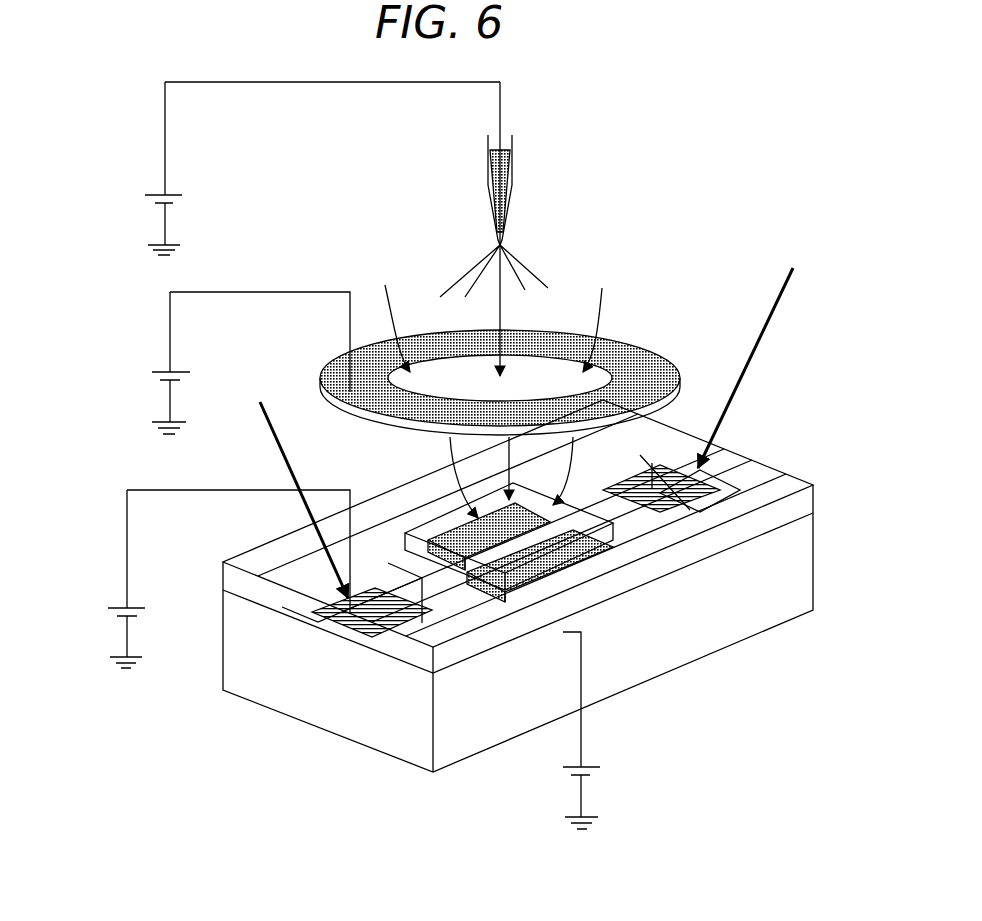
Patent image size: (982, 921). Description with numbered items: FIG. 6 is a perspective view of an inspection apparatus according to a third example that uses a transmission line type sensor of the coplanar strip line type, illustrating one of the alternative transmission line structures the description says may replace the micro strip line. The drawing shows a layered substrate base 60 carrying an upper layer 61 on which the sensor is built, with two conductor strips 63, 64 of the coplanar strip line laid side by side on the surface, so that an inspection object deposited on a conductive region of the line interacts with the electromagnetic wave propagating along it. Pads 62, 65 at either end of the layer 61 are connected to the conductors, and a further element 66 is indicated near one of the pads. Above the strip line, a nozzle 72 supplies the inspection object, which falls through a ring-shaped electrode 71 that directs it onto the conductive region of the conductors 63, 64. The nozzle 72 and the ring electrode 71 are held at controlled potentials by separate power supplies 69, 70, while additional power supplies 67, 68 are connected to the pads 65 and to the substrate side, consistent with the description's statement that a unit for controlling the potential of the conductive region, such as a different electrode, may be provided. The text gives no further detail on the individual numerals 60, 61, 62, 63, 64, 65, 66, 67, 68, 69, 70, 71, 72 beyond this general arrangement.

The substrate 60 is at (750, 627).
The insulating layer 61 is at (788, 478).
The electrode pad 62 is at (655, 445).
The first electrode 63 is at (445, 520).
The second electrode 64 is at (590, 572).
The electrode pad 65 is at (330, 628).
The wiring 66 is at (680, 503).
The power supply 67 is at (110, 618).
The power supply 68 is at (597, 778).
The power supply 69 is at (148, 207).
The power supply 70 is at (152, 382).
The ring electrode 71 is at (573, 298).
The nozzle 72 is at (515, 165).